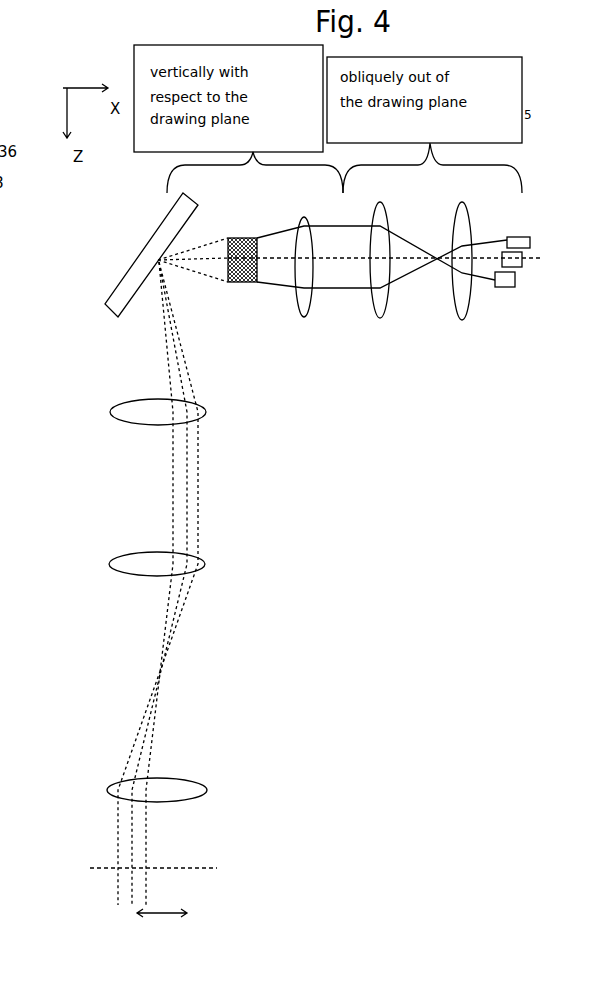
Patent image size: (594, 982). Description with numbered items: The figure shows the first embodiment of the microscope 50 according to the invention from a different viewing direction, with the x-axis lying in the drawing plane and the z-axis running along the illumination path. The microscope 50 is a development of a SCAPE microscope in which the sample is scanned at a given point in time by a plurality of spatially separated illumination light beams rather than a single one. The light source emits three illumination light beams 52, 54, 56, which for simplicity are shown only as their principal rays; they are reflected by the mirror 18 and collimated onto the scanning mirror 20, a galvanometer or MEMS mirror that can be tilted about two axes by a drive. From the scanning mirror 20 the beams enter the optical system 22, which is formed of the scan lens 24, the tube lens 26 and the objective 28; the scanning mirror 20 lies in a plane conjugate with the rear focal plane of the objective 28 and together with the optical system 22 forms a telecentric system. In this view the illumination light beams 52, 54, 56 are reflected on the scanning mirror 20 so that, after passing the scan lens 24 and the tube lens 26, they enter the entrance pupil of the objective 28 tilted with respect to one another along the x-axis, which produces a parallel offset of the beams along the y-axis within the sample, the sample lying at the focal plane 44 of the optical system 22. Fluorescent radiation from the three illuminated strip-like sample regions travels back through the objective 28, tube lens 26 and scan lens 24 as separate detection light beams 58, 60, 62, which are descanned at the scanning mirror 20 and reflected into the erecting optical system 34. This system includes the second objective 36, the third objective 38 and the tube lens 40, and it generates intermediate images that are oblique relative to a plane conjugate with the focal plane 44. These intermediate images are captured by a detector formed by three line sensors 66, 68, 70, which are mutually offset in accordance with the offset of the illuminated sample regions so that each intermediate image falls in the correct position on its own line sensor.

The mirror 18 is at (236, 240).
The scanning mirror 20 is at (178, 200).
The optical system 22 is at (143, 583).
The scan lens 24 is at (205, 410).
The tube lens 26 is at (204, 563).
The objective 28 is at (207, 790).
The erecting optical system 34 is at (368, 372).
The second objective 36 is at (311, 293).
The third objective 38 is at (389, 296).
The tube lens 40 is at (470, 302).
The focal plane 44 is at (217, 868).
The microscope 50 is at (296, 741).
The illumination light beam 52 is at (135, 583).
The illumination light beam 54 is at (198, 583).
The illumination light beam 56 is at (202, 583).
The detection light beam 58 is at (173, 487).
The detection light beam 60 is at (188, 488).
The detection light beam 62 is at (199, 527).
The line sensor 66 is at (513, 287).
The line sensor 68 is at (522, 259).
The line sensor 70 is at (530, 241).